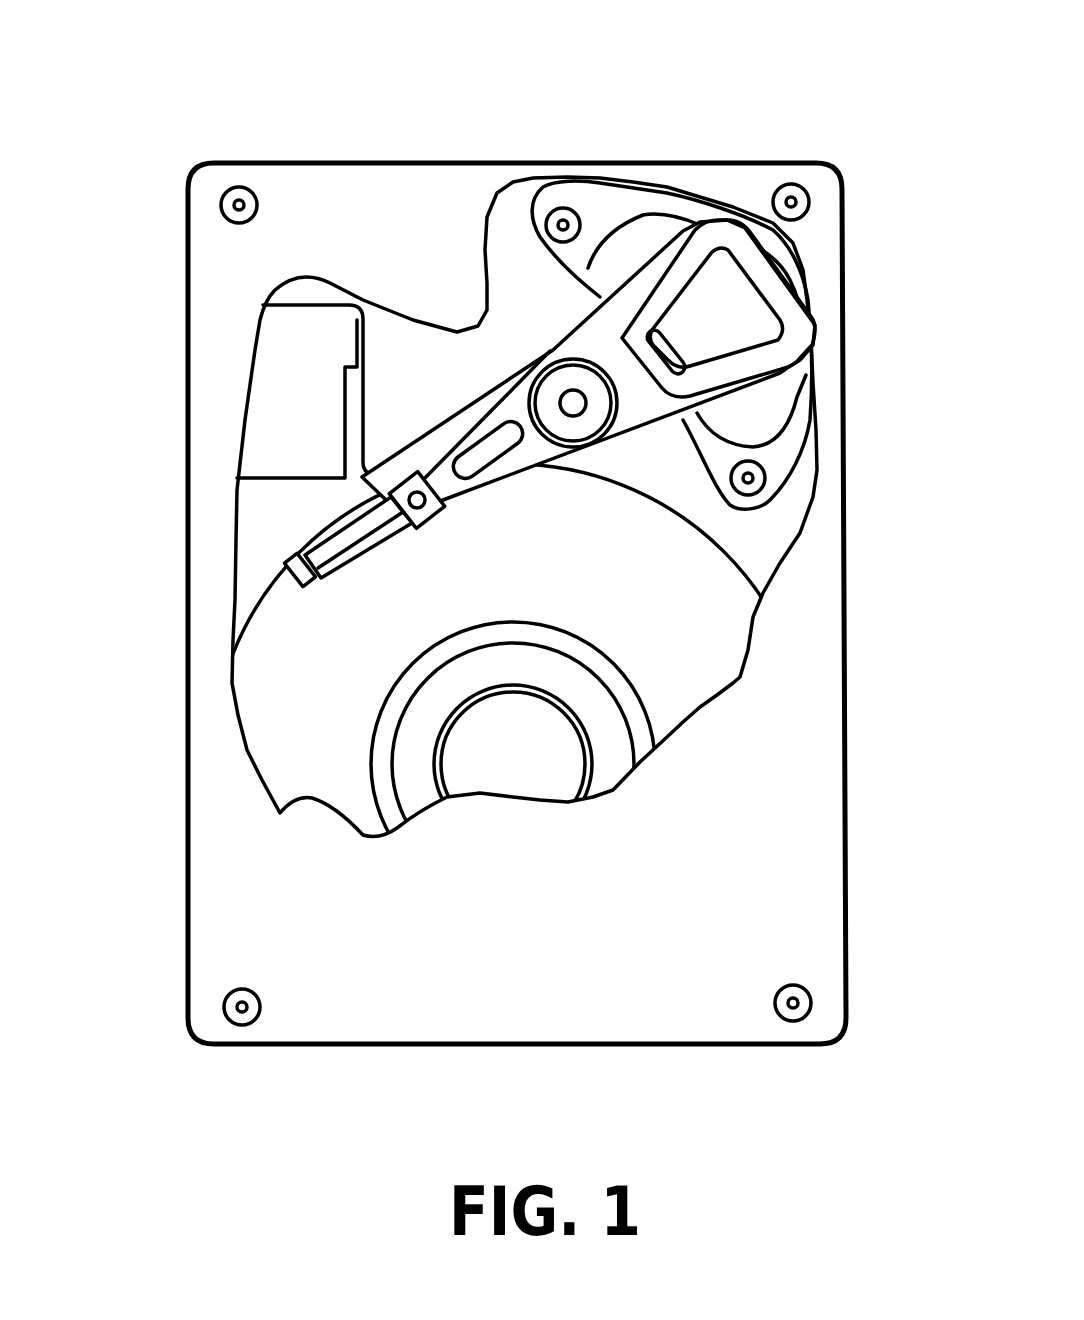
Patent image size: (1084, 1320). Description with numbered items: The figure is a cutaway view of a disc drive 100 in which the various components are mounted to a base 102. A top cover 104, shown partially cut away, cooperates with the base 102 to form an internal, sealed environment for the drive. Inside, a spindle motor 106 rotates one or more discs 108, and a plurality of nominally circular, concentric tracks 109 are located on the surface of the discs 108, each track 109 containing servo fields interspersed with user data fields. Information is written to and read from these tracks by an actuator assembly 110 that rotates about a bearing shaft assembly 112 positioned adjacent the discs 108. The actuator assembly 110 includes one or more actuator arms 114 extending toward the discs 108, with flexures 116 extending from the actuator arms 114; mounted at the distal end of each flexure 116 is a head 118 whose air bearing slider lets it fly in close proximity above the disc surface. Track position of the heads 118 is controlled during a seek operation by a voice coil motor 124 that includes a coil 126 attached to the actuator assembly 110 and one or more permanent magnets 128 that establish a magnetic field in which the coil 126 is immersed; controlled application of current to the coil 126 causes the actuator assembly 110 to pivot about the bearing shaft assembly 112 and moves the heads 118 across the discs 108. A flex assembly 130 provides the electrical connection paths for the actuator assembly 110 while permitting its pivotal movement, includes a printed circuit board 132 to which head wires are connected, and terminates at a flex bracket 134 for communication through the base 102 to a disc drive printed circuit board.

The disc drive 100 is at (228, 112).
The base 102 is at (270, 547).
The top cover 104 is at (247, 872).
The spindle motor 106 is at (512, 767).
The disc 108 is at (700, 667).
The track 109 is at (380, 753).
The actuator assembly 110 is at (556, 500).
The bearing shaft assembly 112 is at (593, 417).
The actuator arm 114 is at (500, 470).
The flexure 116 is at (357, 540).
The head 118 is at (297, 583).
The voice coil motor 124 is at (607, 165).
The coil 126 is at (782, 305).
The permanent magnet 128 is at (610, 257).
The flex assembly 130 is at (480, 402).
The printed circuit board 132 is at (532, 367).
The flex bracket 134 is at (285, 405).